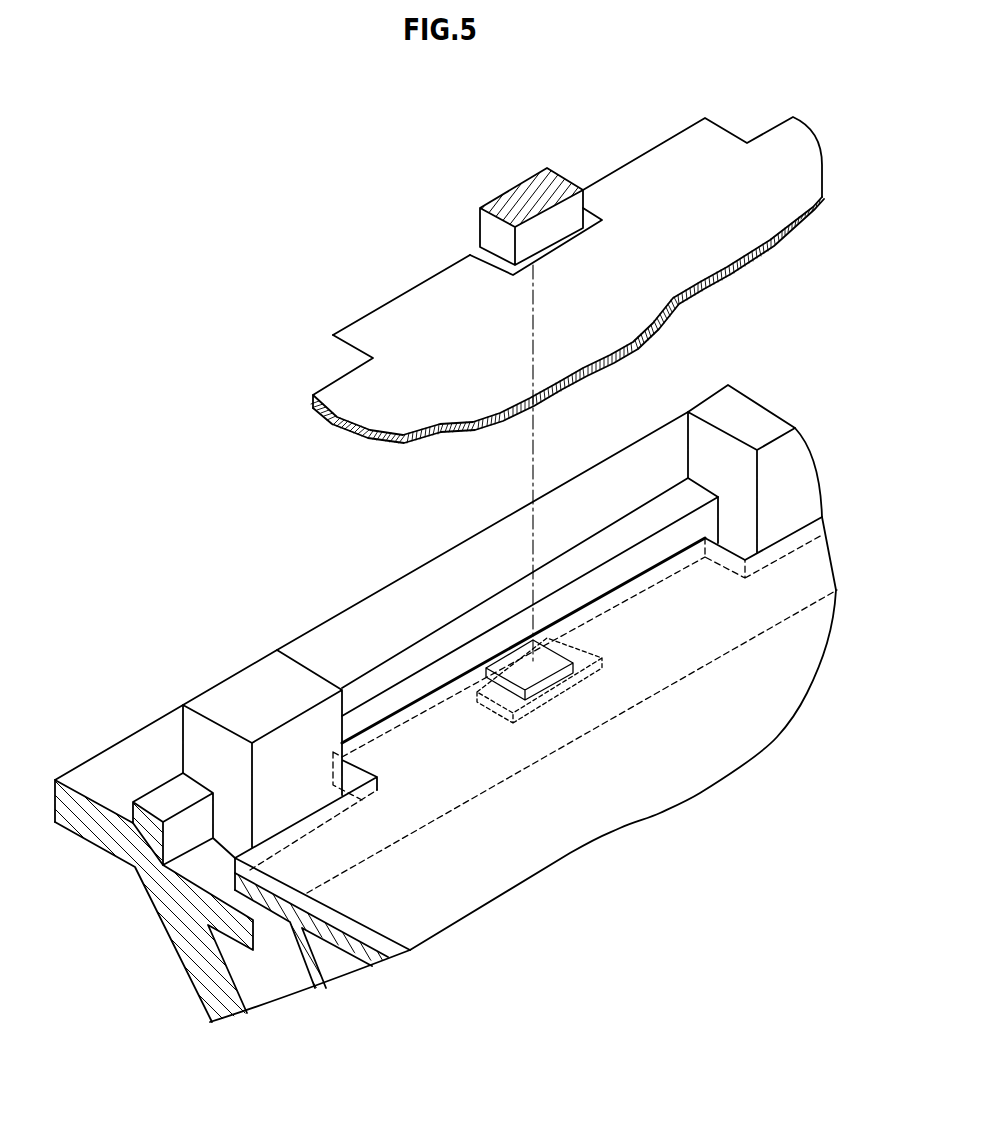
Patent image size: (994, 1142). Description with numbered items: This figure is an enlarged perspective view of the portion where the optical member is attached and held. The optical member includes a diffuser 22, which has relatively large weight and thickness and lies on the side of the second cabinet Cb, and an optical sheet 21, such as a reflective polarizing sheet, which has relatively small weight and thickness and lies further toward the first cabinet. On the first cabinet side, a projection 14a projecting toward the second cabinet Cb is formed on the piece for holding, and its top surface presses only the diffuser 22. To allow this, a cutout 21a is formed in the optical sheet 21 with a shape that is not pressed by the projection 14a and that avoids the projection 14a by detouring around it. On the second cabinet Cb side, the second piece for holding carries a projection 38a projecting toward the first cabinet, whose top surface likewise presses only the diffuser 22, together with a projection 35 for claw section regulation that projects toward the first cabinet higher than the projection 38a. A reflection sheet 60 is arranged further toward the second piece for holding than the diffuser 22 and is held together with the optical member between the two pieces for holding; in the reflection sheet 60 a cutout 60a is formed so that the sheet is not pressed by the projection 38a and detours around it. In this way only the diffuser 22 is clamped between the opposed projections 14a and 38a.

The projection 14a is at (479, 226).
The optical sheet 21 is at (393, 340).
The cutout 21a is at (472, 255).
The diffuser 22 is at (447, 905).
The projection 35 is at (757, 418).
The projection 38a is at (510, 655).
The reflection sheet 60 is at (327, 955).
The cutout 60a is at (568, 645).
The second cabinet Cb is at (127, 757).